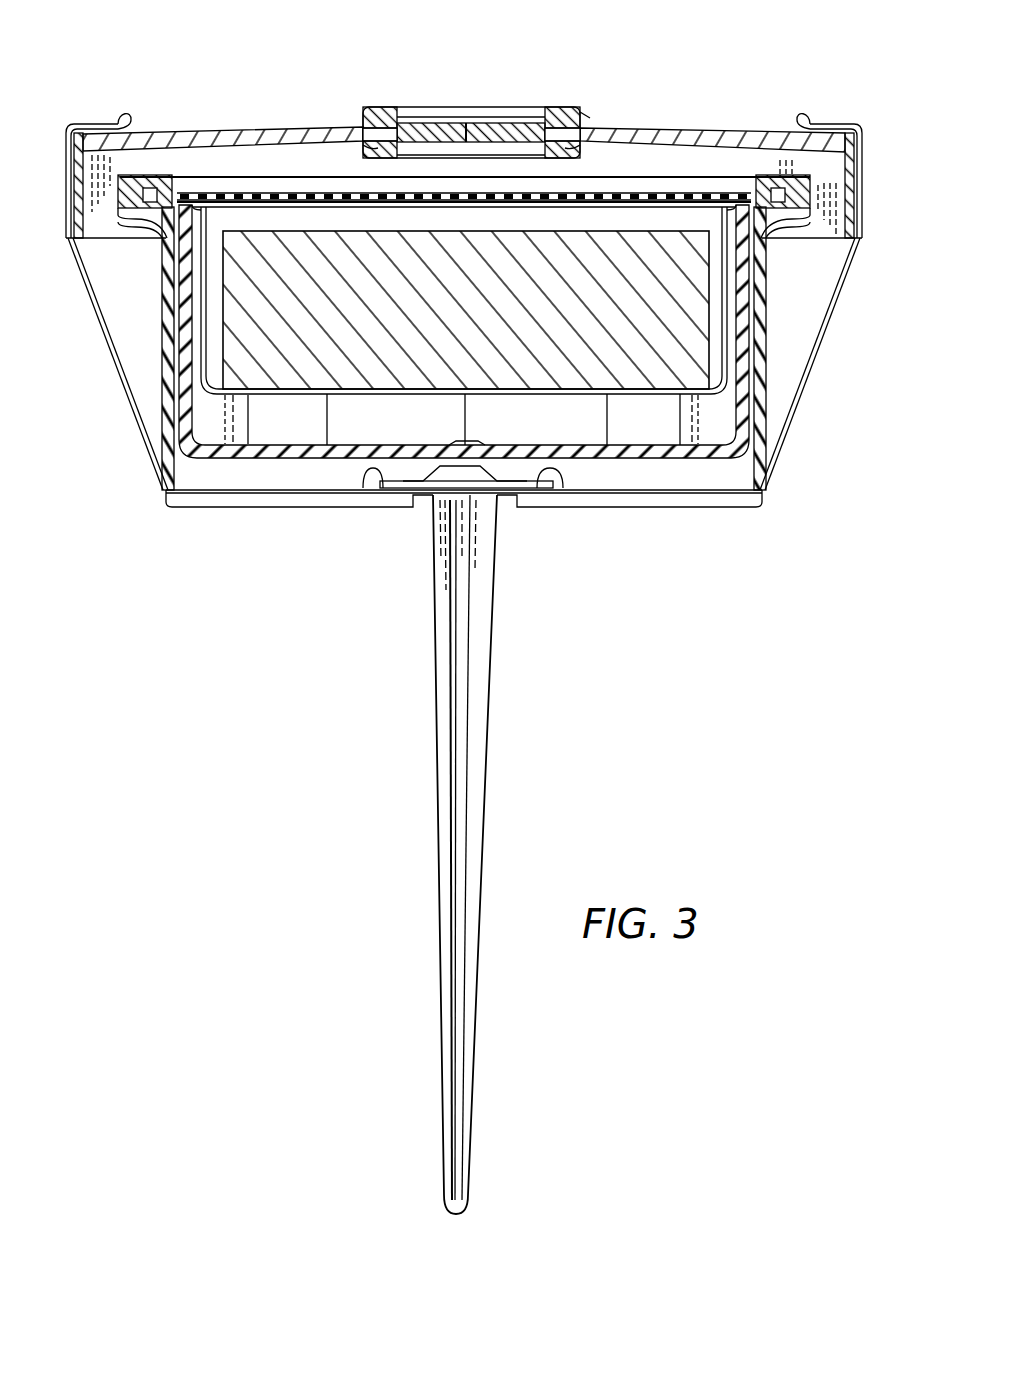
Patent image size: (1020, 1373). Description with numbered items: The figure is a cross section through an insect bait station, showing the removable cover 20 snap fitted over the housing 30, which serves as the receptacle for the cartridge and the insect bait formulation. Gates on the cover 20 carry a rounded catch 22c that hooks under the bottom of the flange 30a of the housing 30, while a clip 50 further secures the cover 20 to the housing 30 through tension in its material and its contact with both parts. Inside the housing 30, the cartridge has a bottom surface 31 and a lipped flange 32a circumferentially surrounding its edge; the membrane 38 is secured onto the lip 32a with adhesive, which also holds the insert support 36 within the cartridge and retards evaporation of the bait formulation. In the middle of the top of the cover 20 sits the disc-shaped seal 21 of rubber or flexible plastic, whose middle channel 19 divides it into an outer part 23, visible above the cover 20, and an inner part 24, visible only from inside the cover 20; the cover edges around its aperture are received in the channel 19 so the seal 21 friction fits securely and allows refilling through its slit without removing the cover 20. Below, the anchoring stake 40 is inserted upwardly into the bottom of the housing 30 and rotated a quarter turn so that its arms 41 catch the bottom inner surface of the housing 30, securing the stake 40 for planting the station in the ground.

The middle channel 19 is at (588, 118).
The removable cover 20 is at (183, 120).
The seal 21 is at (427, 90).
The rounded catch 22c is at (120, 218).
The outer part 23 is at (366, 110).
The inner part 24 is at (365, 155).
The housing 30 is at (772, 358).
The flange 30a is at (765, 352).
The bottom surface 31 is at (363, 445).
The lipped flange 32a is at (750, 198).
The insert support 36 is at (640, 231).
The membrane 38 is at (689, 200).
The anchoring stake 40 is at (505, 622).
The arms 41 is at (355, 508).
The clip 50 is at (114, 364).